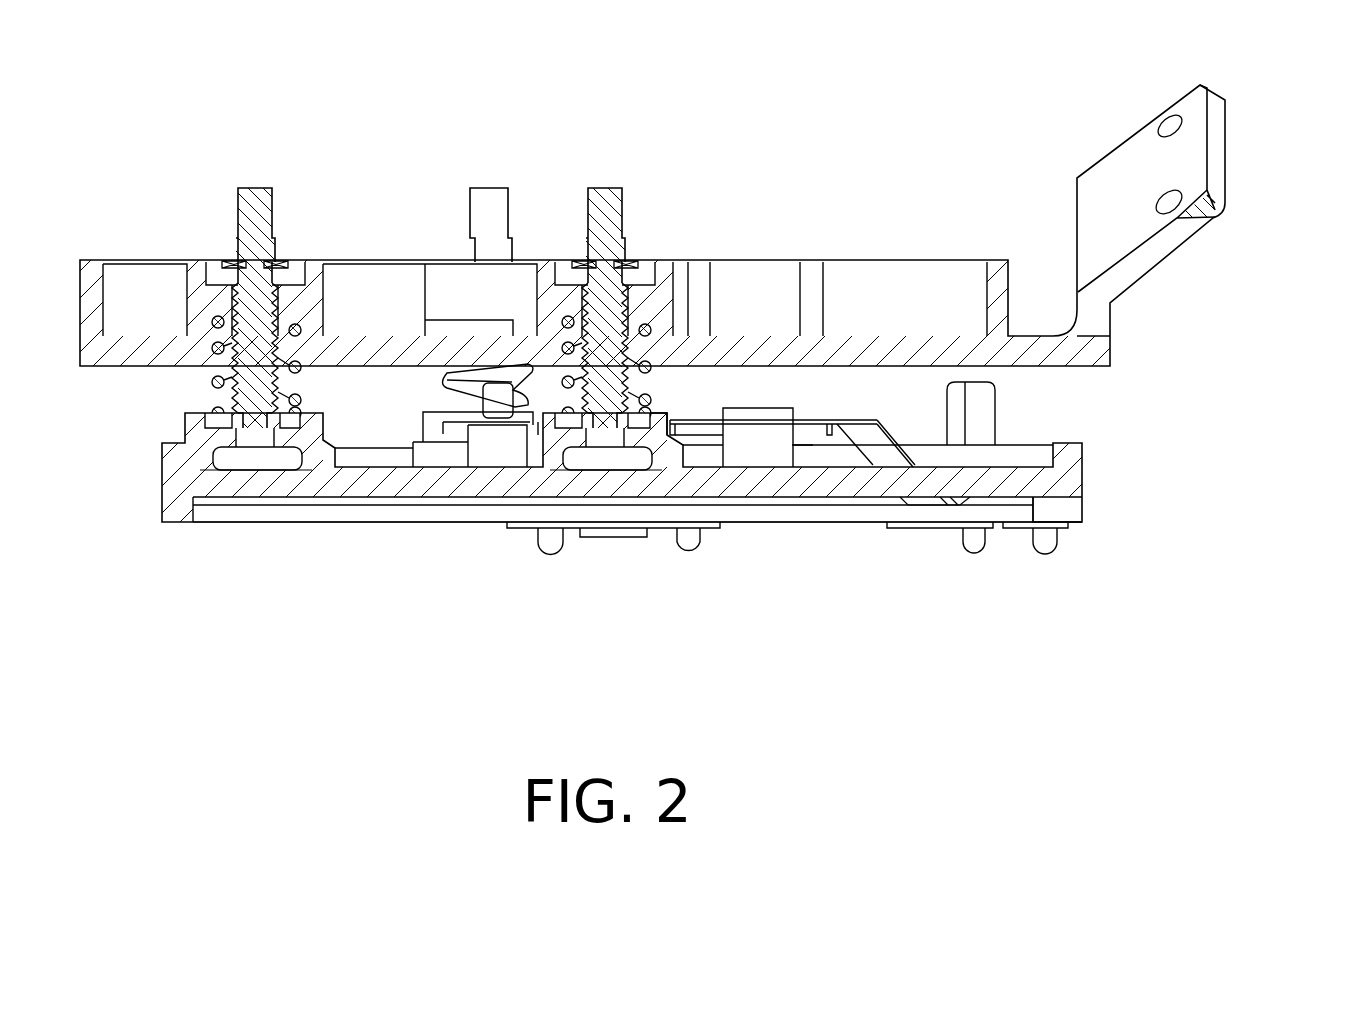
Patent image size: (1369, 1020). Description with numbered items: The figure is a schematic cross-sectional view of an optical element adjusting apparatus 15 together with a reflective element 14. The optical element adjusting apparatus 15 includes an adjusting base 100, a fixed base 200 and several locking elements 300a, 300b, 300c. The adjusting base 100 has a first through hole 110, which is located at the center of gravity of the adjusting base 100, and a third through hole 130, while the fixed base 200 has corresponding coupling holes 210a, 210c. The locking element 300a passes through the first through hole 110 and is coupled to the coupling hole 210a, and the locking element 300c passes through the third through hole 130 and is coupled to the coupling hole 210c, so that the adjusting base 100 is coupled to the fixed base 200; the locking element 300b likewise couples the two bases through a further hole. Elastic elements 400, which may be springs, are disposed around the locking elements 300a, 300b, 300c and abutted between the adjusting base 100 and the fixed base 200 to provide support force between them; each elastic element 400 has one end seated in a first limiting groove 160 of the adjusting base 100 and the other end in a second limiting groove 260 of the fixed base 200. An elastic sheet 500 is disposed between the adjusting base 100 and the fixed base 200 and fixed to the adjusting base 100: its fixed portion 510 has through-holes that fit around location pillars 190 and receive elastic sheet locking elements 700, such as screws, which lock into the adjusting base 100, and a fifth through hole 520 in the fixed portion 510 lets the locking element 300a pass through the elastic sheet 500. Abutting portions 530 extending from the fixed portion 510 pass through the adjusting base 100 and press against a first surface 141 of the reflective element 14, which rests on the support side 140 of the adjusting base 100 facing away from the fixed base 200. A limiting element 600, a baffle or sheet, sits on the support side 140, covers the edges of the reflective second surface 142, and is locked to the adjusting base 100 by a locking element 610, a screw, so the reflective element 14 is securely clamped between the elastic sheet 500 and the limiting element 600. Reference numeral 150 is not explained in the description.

The adjusting base 100 is at (1165, 474).
The first through hole 110 is at (624, 500).
The third through hole 130 is at (270, 488).
The reflective element 14 is at (865, 505).
The support side 140 is at (1008, 497).
The first surface 141 is at (968, 478).
The second surface 142 is at (917, 522).
The optical element adjusting apparatus 15 is at (1196, 670).
The post 150 is at (1043, 440).
The first limiting groove 160 is at (543, 432).
The location pillar 190 is at (500, 402).
The fixed base 200 is at (1165, 350).
The coupling hole 210a is at (647, 263).
The coupling hole 210c is at (302, 263).
The second limiting groove 260 is at (520, 395).
The locking element 300a is at (606, 210).
The locking element 300b is at (490, 206).
The locking element 300c is at (256, 210).
The elastic element 400 is at (300, 385).
The elastic sheet 500 is at (794, 287).
The fixed portion 510 is at (818, 428).
The fifth through hole 520 is at (663, 445).
The abutting portion 530 is at (878, 440).
The limiting element 600 is at (1022, 528).
The locking element 610 is at (1045, 540).
The elastic sheet locking element 700 is at (765, 412).